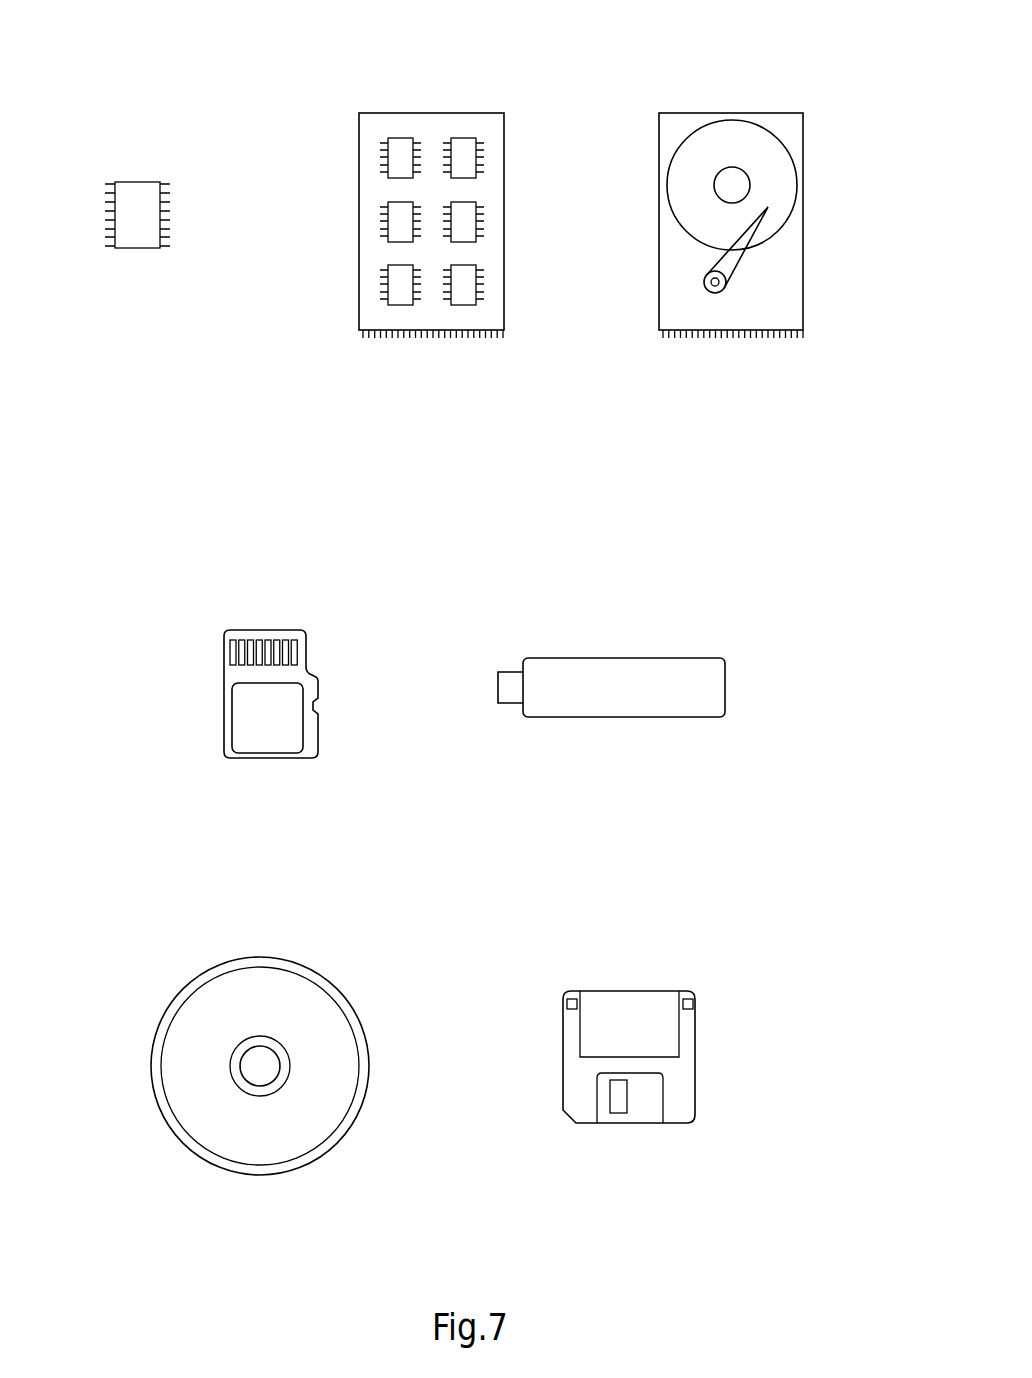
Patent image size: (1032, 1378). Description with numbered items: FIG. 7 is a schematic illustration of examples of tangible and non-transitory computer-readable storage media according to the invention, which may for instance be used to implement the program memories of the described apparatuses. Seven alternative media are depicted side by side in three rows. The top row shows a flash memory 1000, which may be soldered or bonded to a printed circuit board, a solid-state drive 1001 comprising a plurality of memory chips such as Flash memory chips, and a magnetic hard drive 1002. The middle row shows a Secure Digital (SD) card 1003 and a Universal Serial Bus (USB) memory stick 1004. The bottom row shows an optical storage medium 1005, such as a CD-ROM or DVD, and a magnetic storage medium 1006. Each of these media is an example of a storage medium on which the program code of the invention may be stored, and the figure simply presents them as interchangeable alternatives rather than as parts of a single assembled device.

The flash memory 1000 is at (166, 138).
The solid-state drive 1001 is at (510, 70).
The magnetic hard drive 1002 is at (810, 70).
The Secure Digital (SD) card 1003 is at (311, 594).
The Universal Serial Bus (USB) memory stick 1004 is at (700, 615).
The optical storage medium 1005 is at (351, 949).
The magnetic storage medium 1006 is at (693, 949).